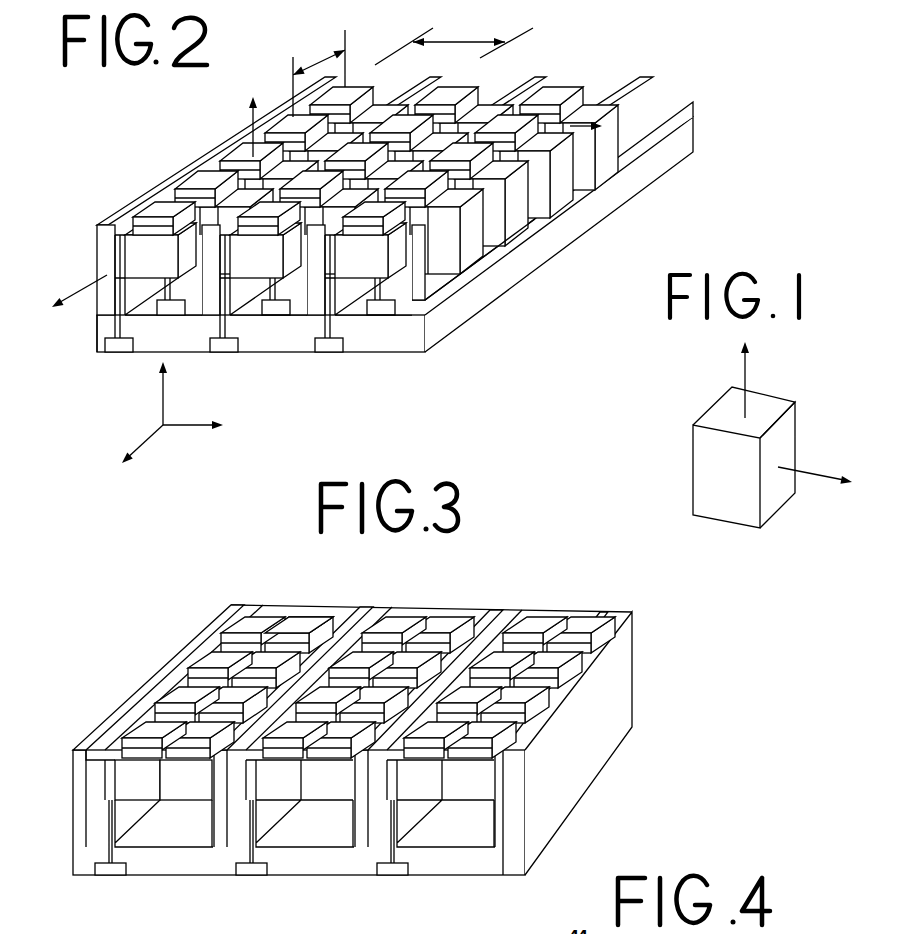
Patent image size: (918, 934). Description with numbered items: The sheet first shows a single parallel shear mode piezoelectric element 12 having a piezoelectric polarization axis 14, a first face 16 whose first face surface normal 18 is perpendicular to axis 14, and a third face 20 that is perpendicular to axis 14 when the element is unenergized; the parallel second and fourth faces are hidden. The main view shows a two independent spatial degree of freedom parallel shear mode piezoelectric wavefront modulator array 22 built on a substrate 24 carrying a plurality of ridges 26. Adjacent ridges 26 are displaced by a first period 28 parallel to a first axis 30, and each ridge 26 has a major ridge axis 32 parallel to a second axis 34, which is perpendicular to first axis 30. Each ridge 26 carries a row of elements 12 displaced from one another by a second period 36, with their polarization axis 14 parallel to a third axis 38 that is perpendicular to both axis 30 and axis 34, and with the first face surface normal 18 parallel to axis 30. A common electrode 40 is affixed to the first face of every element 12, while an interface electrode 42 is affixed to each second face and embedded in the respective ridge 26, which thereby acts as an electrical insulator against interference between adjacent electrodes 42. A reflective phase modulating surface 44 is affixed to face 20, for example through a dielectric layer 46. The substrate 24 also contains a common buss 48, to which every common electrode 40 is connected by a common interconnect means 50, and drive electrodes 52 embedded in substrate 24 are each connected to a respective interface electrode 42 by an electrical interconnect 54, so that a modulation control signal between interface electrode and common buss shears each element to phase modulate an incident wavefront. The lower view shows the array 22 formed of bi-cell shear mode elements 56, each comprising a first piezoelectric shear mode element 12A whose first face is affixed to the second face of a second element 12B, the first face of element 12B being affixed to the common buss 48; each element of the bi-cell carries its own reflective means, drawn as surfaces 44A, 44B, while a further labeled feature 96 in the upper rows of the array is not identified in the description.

In FIG. 2, the parallel shear mode piezoelectric element 12 is at (355, 258).
In FIG. 1, the parallel shear mode piezoelectric element 12 is at (693, 480).
In FIG. 3, the first piezoelectric shear mode element 12A is at (128, 782).
In FIG. 3, the second element 12B is at (178, 785).
In FIG. 2, the piezoelectric polarization axis 14 is at (253, 120).
In FIG. 1, the piezoelectric polarization axis 14 is at (748, 372).
In FIG. 1, the first face 16 is at (777, 483).
In FIG. 2, the first face surface normal 18 is at (580, 118).
In FIG. 1, the first face surface normal 18 is at (807, 467).
In FIG. 1, the third face 20 is at (770, 405).
In FIG. 2, the wavefront modulator array 22 is at (488, 306).
In FIG. 3, the wavefront modulator array 22 is at (411, 860).
In FIG. 2, the substrate 24 is at (537, 245).
In FIG. 2, the ridges 26 is at (100, 255).
In FIG. 2, the first period 28 is at (452, 40).
In FIG. 2, the first axis 30 is at (187, 427).
In FIG. 2, the major ridge axis 32 is at (87, 277).
In FIG. 2, the second axis 34 is at (150, 447).
In FIG. 2, the second period 36 is at (315, 63).
In FIG. 2, the third axis 38 is at (162, 392).
In FIG. 2, the common electrode 40 is at (393, 247).
In FIG. 2, the interface electrode 42 is at (120, 250).
In FIG. 2, the reflective phase modulating surface 44 is at (557, 98).
In FIG. 3, the top electrode pad 44A is at (256, 638).
In FIG. 3, the top electrode pad 44B is at (300, 630).
In FIG. 2, the dielectric layer 46 is at (152, 230).
In FIG. 2, the common buss 48 is at (648, 112).
In FIG. 3, the common buss 48 is at (220, 843).
In FIG. 2, the common interconnect means 50 is at (530, 185).
In FIG. 2, the drive electrodes 52 is at (227, 342).
In FIG. 2, the electrical interconnect 54 is at (330, 312).
In FIG. 3, the bi-cell shear mode element 56 is at (138, 772).
In FIG. 2, the electrode pad 96 is at (210, 168).